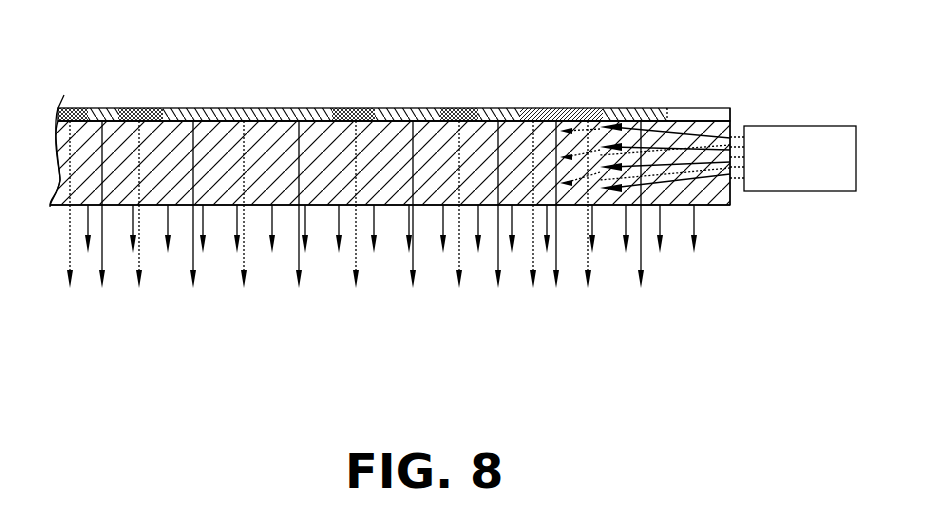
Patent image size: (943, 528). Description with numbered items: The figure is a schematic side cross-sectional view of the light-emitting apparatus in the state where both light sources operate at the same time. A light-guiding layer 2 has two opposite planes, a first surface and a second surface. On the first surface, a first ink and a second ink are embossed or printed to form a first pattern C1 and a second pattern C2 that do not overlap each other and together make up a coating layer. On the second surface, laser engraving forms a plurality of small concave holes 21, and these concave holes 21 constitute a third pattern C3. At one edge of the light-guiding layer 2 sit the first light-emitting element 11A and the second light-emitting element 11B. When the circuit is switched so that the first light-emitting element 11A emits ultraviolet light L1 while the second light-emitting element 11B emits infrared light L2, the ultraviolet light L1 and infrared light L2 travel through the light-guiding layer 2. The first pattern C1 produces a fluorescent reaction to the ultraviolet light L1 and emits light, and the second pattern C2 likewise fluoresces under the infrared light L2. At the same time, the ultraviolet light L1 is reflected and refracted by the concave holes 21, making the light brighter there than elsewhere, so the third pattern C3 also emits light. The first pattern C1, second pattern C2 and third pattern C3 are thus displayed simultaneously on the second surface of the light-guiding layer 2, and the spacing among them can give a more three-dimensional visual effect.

The light-guiding layer 2 is at (374, 135).
The concave holes 21 is at (330, 206).
The third pattern C3 is at (215, 214).
The second pattern C2 is at (448, 107).
The first pattern C1 is at (500, 107).
The infrared light L2 is at (660, 128).
The ultraviolet light L1 is at (687, 121).
The first light-emitting element 11A is at (819, 116).
The second light-emitting element 11B is at (773, 138).